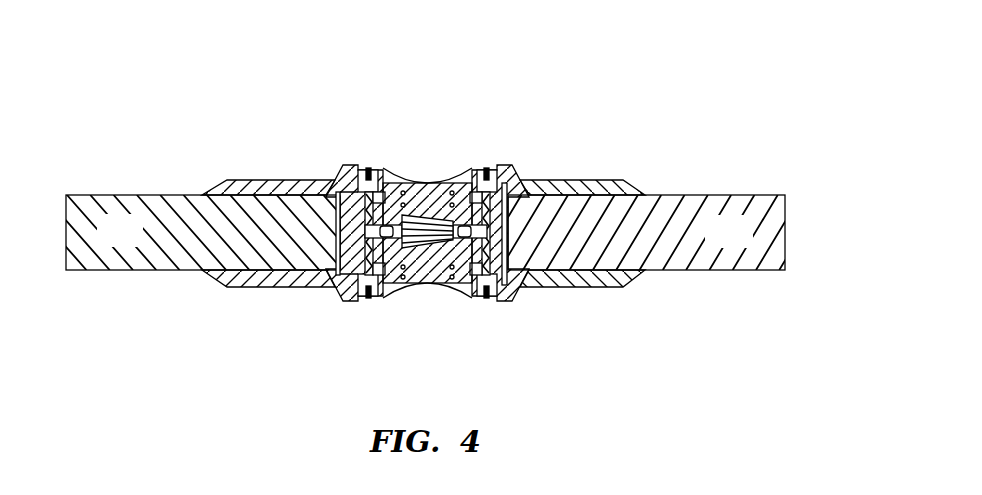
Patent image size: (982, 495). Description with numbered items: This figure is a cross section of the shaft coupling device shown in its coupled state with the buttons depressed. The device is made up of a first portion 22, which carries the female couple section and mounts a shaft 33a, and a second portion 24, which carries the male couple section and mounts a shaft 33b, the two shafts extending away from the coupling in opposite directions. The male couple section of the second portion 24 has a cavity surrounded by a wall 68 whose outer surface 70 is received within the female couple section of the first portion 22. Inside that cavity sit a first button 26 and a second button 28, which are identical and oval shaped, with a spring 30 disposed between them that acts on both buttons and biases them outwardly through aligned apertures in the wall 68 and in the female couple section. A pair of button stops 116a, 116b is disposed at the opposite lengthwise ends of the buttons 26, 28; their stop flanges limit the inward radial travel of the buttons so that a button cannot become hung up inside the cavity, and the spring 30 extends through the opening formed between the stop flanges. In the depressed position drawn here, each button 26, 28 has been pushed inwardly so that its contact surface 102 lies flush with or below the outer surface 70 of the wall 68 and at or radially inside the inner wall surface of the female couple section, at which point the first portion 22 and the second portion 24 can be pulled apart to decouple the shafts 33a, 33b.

The first portion 22 is at (608, 108).
The second portion 24 is at (276, 147).
The first button 26 is at (425, 183).
The second button 28 is at (433, 270).
The spring 30 is at (415, 270).
The wall 68 is at (377, 172).
The outer surface 70 is at (368, 172).
The contact surface 102 is at (452, 175).
The button stop 116a is at (332, 276).
The button stop 116b is at (512, 187).
The shaft 33a is at (748, 243).
The shaft 33b is at (139, 243).